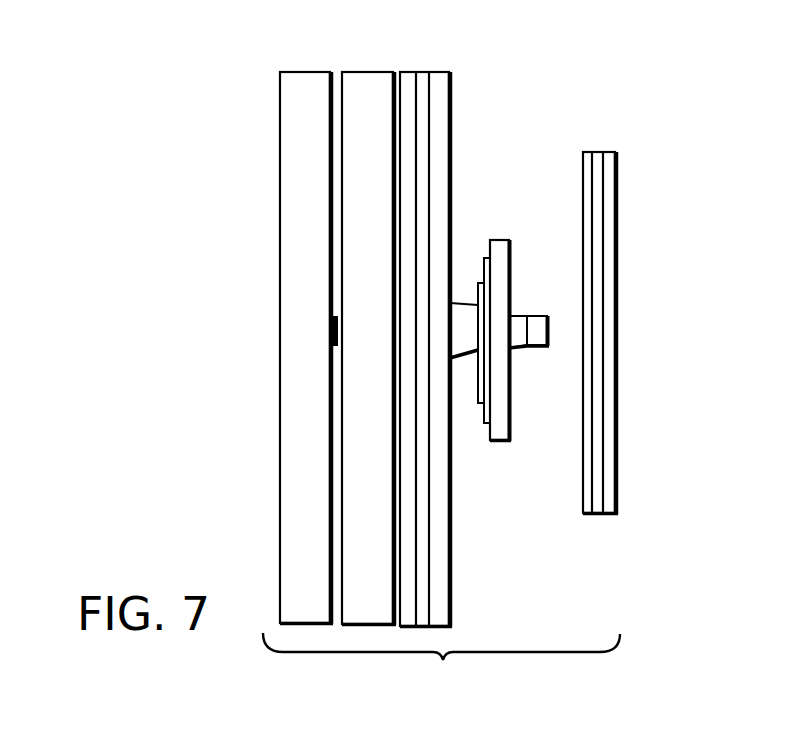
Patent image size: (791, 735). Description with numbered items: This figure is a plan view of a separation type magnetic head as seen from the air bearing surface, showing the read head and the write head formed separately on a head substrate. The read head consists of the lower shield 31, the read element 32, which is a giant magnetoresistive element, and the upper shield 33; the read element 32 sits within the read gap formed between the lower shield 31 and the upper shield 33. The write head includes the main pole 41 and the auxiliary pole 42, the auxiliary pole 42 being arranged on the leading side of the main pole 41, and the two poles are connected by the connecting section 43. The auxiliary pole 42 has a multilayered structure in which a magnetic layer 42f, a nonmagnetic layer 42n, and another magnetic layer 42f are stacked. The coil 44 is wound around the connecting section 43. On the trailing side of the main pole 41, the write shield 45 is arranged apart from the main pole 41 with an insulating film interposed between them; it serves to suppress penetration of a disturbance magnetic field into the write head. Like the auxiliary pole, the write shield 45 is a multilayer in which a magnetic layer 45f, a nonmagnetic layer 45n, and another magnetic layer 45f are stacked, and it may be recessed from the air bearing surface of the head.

The lower shield 31 is at (283, 89).
The read element 32 is at (330, 339).
The upper shield 33 is at (365, 78).
The main pole 41 is at (537, 326).
The auxiliary pole 42 is at (441, 325).
The magnetic layer 42f is at (412, 77).
The nonmagnetic layer 42n is at (426, 77).
The connecting section 43 is at (463, 312).
The coil 44 is at (498, 438).
The write shield 45 is at (602, 345).
The magnetic layer 45f is at (592, 155).
The nonmagnetic layer 45n is at (601, 155).